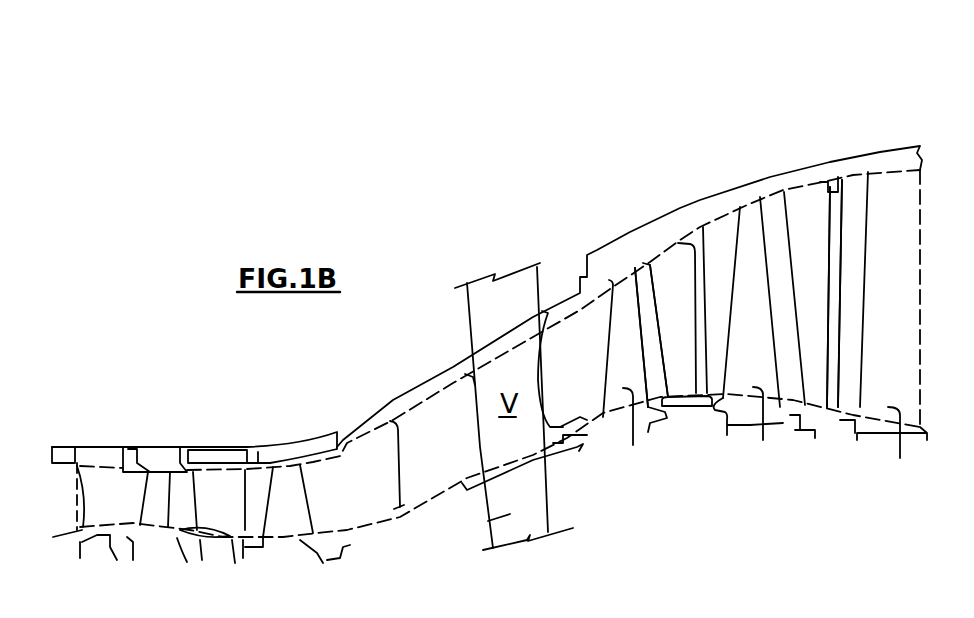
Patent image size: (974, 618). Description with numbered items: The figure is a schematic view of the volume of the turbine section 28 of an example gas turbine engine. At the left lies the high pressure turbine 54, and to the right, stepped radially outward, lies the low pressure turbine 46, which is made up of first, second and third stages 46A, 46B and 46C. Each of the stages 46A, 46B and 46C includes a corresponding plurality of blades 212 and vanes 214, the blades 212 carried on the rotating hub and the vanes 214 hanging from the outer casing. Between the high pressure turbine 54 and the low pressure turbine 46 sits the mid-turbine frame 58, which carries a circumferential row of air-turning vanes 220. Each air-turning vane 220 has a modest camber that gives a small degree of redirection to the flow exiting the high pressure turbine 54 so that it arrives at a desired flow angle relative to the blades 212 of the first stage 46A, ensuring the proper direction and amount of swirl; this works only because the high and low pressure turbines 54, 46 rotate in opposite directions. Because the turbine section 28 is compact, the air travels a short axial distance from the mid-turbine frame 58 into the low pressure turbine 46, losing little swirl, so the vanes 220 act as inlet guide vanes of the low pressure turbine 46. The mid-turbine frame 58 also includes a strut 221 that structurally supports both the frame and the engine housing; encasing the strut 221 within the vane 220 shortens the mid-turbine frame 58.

The turbine section 28 is at (716, 89).
The low pressure turbine 46 is at (553, 198).
The first stage 46A is at (614, 470).
The second stage 46B is at (731, 468).
The third stage 46C is at (850, 468).
The high pressure turbine 54 is at (313, 418).
The mid-turbine frame 58 is at (452, 389).
The blades 212 is at (915, 481).
The vanes 214 is at (672, 268).
The air-turning vane 220 is at (505, 377).
The strut 221 is at (492, 522).